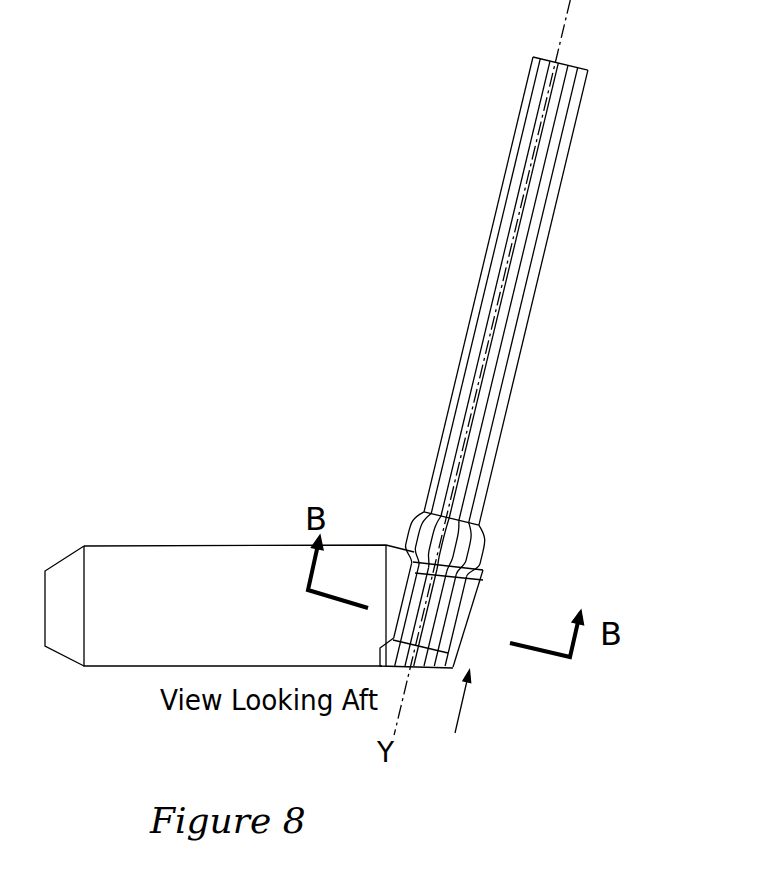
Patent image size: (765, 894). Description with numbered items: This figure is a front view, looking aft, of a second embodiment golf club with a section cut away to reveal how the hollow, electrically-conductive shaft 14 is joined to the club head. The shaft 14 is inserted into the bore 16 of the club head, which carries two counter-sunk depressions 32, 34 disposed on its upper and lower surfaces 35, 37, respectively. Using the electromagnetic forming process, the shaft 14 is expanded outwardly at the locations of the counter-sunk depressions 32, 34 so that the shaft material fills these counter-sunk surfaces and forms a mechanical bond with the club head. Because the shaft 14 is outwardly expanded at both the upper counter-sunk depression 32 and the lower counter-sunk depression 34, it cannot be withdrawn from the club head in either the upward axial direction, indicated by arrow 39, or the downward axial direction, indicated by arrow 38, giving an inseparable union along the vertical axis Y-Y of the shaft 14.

The shaft 14 is at (508, 353).
The bore 16 is at (398, 612).
The counter-sunk depression 32 is at (472, 582).
The counter-sunk depression 34 is at (452, 652).
The upper surface 35 is at (142, 546).
The lower surface 37 is at (112, 667).
The arrow 38 is at (494, 550).
The arrow 39 is at (462, 717).